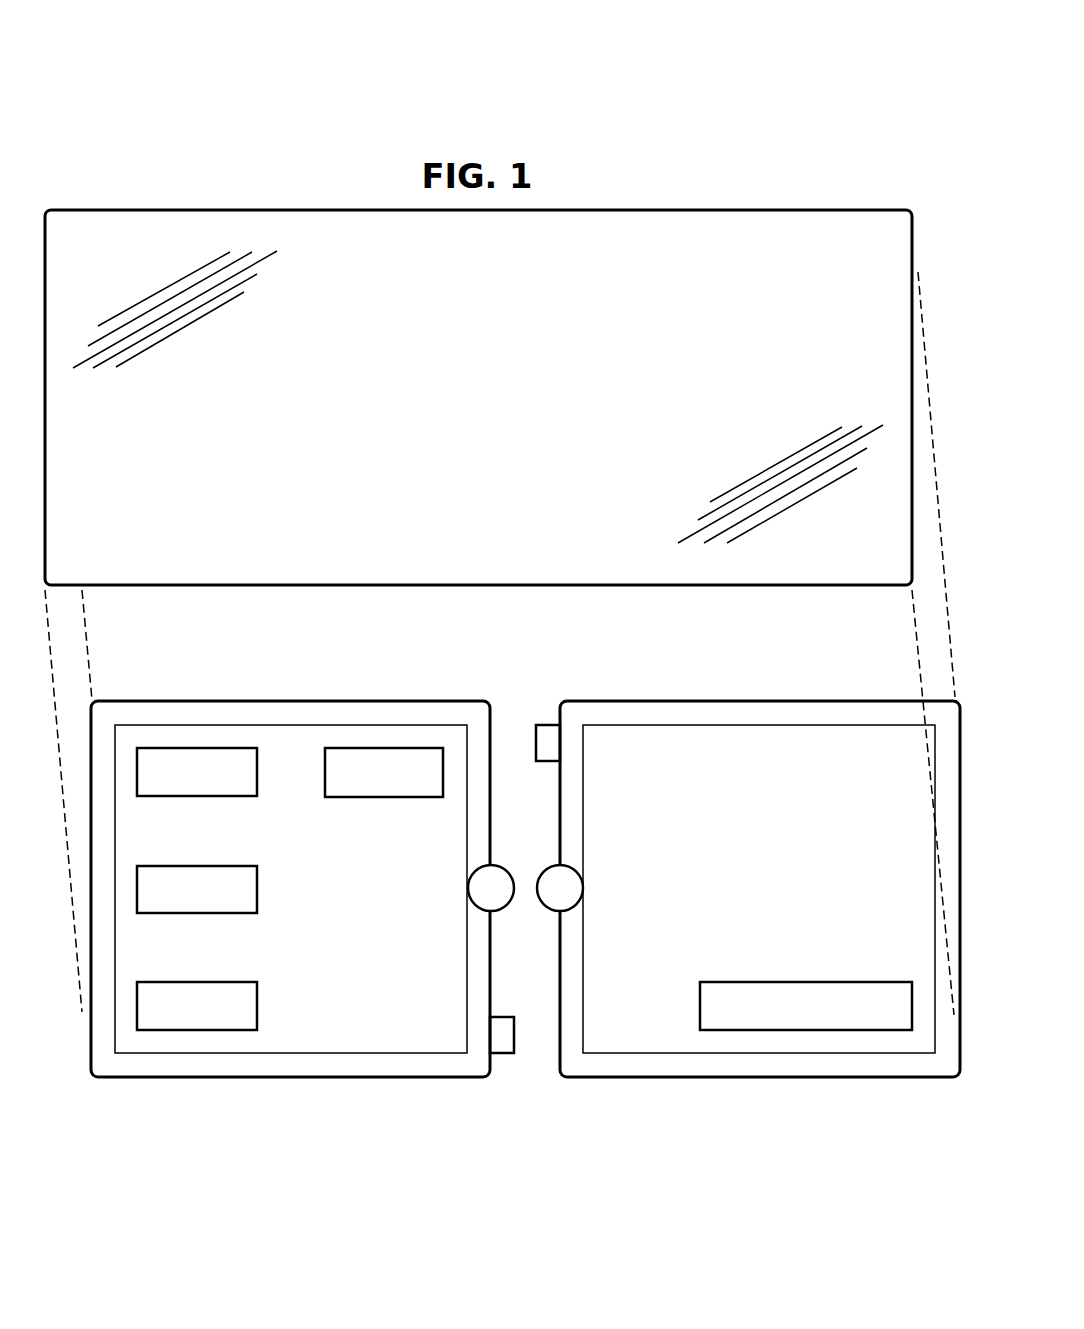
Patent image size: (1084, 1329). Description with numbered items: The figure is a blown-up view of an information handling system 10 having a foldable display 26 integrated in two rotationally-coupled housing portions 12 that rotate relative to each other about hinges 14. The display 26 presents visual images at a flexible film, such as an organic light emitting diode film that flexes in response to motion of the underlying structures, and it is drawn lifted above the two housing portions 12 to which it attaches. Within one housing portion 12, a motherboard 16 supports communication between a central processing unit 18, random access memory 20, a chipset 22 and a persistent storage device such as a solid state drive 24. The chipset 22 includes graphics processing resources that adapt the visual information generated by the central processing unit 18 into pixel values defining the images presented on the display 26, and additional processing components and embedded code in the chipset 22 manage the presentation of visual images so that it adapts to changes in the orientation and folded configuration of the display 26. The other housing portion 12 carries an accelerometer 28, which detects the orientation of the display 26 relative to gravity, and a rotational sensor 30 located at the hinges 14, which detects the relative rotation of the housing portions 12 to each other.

The information handling system 10 is at (208, 163).
The housing portions 12 is at (208, 1088).
The hinges 14 is at (542, 713).
The motherboard 16 is at (377, 980).
The central processing unit 18 is at (197, 797).
The random access memory 20 is at (183, 913).
The chipset 22 is at (210, 980).
The solid state drive 24 is at (383, 797).
The foldable display 26 is at (492, 432).
The accelerometer 28 is at (806, 981).
The rotational sensor 30 is at (566, 866).